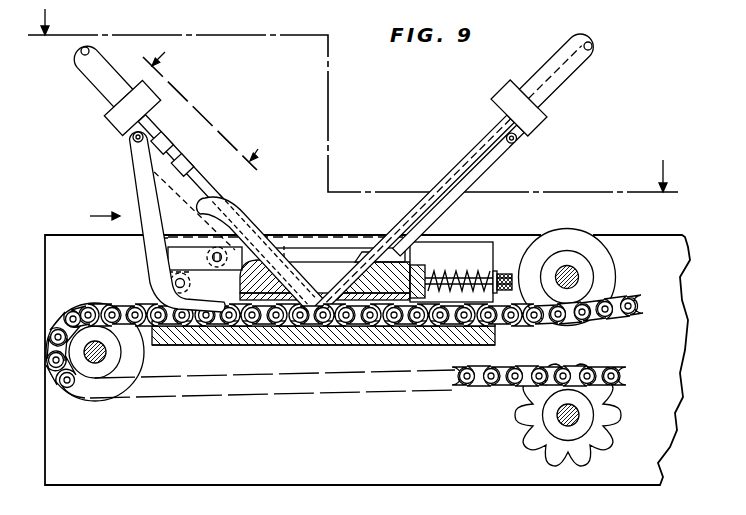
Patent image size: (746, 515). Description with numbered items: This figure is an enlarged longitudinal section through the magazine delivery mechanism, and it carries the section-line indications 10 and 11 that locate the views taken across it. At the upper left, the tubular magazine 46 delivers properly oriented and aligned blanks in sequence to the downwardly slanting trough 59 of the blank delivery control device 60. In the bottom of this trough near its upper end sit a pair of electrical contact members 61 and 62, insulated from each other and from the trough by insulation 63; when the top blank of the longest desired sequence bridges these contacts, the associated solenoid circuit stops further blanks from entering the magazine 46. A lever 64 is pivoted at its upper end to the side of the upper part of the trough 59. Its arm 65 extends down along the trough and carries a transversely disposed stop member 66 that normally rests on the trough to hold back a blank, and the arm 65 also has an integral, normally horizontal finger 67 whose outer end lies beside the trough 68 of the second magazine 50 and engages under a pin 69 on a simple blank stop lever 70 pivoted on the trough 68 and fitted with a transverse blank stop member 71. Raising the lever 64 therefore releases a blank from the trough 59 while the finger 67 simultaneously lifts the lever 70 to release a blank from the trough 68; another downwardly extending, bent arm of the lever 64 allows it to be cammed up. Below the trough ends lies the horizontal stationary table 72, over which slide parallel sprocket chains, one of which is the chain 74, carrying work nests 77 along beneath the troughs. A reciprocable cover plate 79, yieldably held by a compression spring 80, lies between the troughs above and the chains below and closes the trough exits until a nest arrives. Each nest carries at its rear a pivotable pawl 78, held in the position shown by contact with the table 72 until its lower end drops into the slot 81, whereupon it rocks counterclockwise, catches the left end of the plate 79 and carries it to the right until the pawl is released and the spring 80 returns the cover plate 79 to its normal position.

The section line 10- 10 is at (203, 111).
The section line 11- 11 is at (353, 100).
The tubular magazine 46 is at (97, 75).
The magazine 50 is at (550, 68).
The downwardly slanting trough 59 is at (165, 152).
The blank delivery control device 60 is at (90, 216).
The electrical contact member 61 is at (154, 146).
The electrical contact member 62 is at (190, 172).
The insulation 63 is at (150, 152).
The lever 64 is at (144, 193).
The arm 65 is at (255, 225).
The stop member 66 is at (284, 248).
The finger 67 is at (320, 247).
The trough 68 is at (490, 135).
The pin 69 is at (391, 224).
The blank stop lever 70 is at (502, 150).
The blank stop member 71 is at (368, 250).
The stationary table 72 is at (226, 335).
The sprocket chain 74 is at (179, 336).
The work nest 77 is at (293, 317).
The pawl 78 is at (259, 327).
The cover plate 79 is at (318, 299).
The compression spring 80 is at (443, 278).
The slot 81 is at (390, 328).